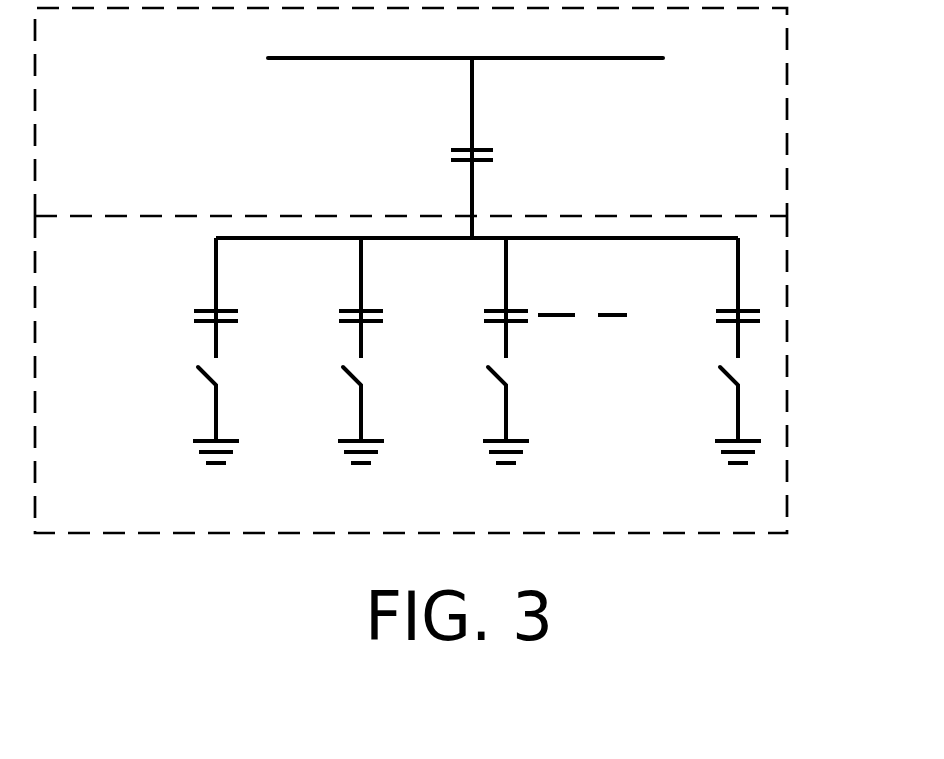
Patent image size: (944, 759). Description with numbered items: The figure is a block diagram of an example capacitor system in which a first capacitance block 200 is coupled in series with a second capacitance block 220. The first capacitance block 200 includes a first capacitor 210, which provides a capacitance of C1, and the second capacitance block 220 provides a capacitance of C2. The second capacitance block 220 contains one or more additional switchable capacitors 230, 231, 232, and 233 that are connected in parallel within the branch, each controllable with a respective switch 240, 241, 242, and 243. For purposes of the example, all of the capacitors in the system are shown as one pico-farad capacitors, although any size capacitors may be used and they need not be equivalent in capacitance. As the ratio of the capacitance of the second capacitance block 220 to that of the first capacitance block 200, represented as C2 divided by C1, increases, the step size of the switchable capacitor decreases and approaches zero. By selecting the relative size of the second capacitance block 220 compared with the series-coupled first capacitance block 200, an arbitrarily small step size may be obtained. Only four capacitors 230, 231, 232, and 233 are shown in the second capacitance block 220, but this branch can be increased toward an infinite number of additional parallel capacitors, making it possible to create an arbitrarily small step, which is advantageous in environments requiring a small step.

The first capacitance block 200 is at (455, 112).
The second capacitance block 220 is at (448, 374).
The capacitance of first capacitor C1 is at (812, 108).
The capacitance of second capacitance block C2 is at (790, 337).
The first capacitor 210 is at (518, 159).
The switchable capacitor 230 is at (170, 298).
The switchable capacitor 231 is at (316, 298).
The switchable capacitor 232 is at (460, 298).
The switchable capacitor 233 is at (695, 298).
The switch 240 is at (202, 410).
The switch 241 is at (346, 410).
The switch 242 is at (490, 410).
The switch 243 is at (724, 410).